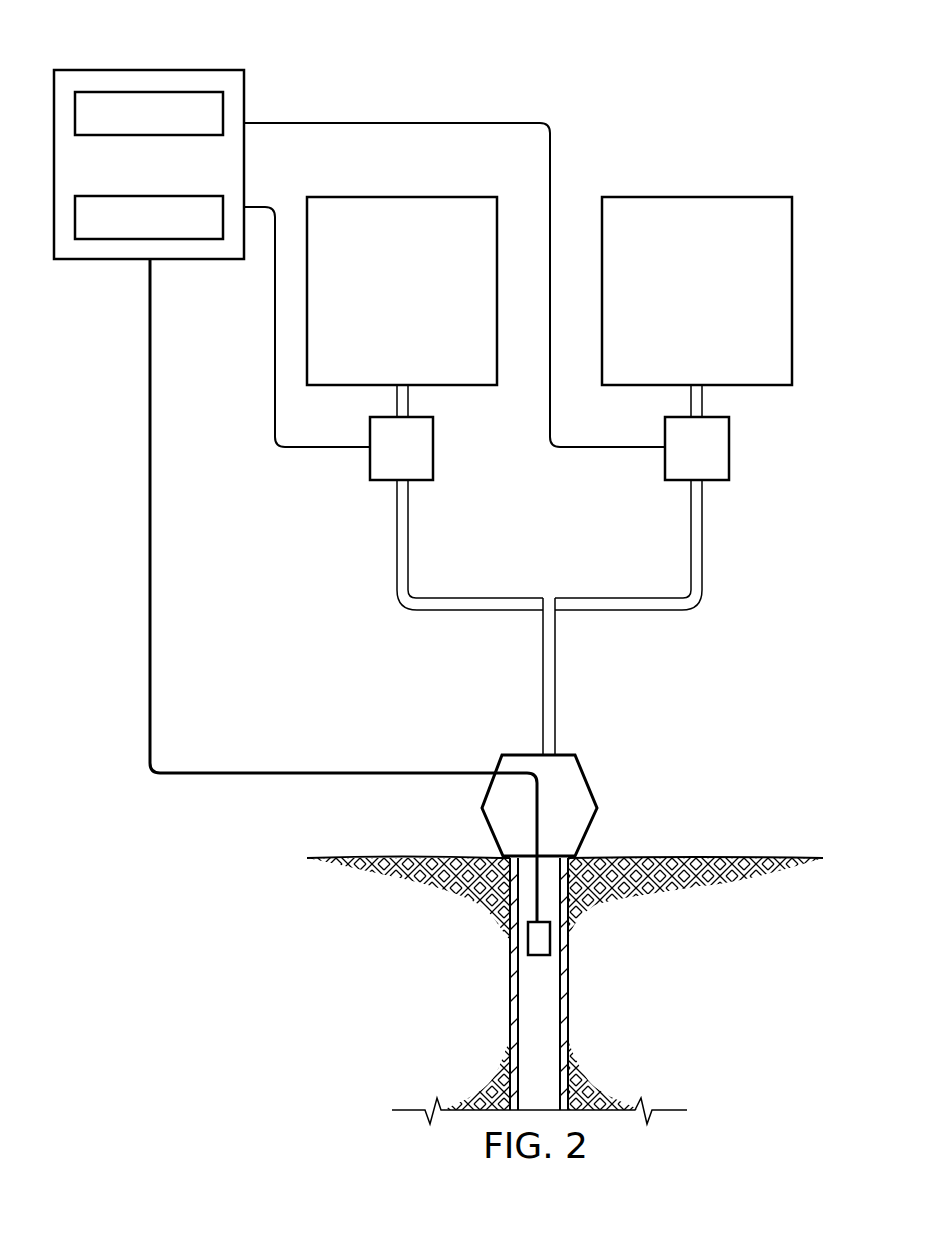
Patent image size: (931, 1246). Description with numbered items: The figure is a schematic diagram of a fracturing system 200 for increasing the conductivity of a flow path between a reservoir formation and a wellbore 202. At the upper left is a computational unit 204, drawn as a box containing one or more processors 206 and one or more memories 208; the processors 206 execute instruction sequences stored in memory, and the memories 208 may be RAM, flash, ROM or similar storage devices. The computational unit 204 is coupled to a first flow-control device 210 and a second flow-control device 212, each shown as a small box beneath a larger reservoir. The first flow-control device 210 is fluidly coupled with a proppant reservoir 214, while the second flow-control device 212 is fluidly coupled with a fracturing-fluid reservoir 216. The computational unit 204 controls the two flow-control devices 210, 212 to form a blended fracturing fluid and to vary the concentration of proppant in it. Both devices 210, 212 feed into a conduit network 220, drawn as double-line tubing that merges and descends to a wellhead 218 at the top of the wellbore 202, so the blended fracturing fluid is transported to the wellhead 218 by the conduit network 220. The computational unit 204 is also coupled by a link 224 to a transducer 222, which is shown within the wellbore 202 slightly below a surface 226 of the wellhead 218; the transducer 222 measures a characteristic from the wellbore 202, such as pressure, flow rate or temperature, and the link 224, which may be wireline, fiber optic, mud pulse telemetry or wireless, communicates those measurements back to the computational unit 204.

The fracturing system 200 is at (670, 92).
The wellbore 202 is at (508, 985).
The computational unit 204 is at (116, 62).
The processor 206 is at (130, 136).
The memory 208 is at (168, 195).
The first flow-control device 210 is at (433, 433).
The second flow-control device 212 is at (729, 433).
The proppant reservoir 214 is at (422, 305).
The fracturing-fluid reservoir 216 is at (716, 305).
The wellhead 218 is at (590, 785).
The conduit network 220 is at (556, 681).
The transducer 222 is at (551, 940).
The link 224 is at (296, 777).
The surface 226 is at (703, 857).